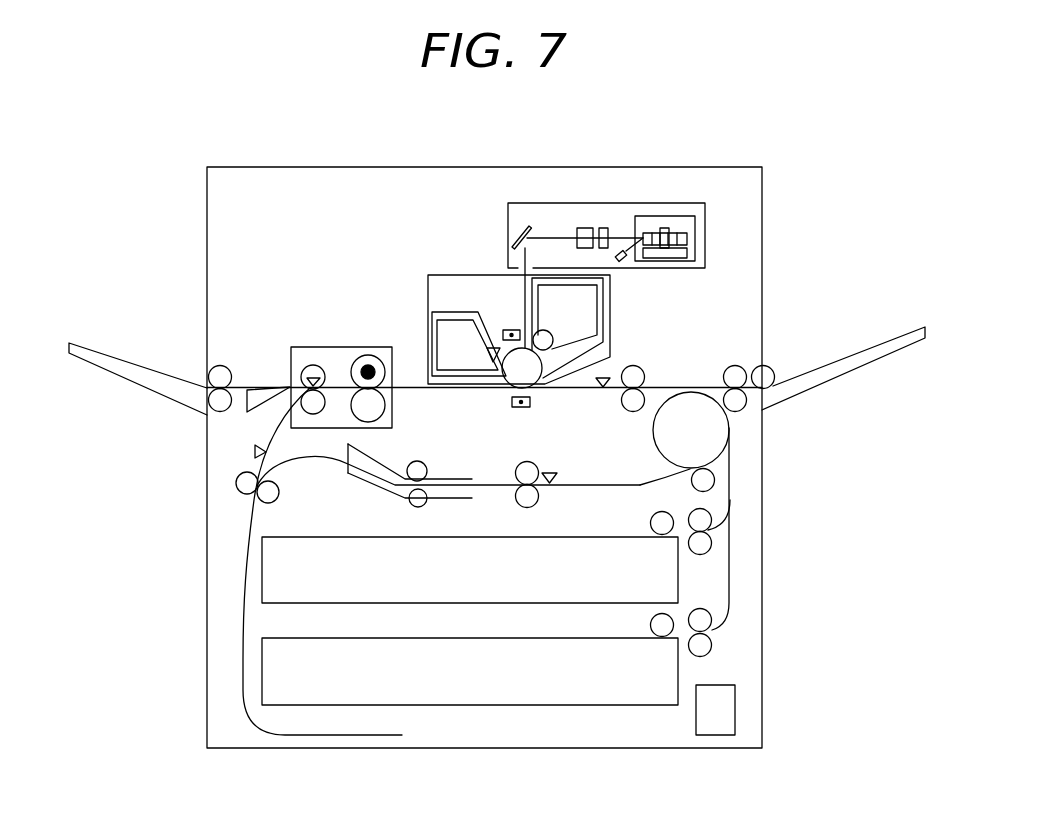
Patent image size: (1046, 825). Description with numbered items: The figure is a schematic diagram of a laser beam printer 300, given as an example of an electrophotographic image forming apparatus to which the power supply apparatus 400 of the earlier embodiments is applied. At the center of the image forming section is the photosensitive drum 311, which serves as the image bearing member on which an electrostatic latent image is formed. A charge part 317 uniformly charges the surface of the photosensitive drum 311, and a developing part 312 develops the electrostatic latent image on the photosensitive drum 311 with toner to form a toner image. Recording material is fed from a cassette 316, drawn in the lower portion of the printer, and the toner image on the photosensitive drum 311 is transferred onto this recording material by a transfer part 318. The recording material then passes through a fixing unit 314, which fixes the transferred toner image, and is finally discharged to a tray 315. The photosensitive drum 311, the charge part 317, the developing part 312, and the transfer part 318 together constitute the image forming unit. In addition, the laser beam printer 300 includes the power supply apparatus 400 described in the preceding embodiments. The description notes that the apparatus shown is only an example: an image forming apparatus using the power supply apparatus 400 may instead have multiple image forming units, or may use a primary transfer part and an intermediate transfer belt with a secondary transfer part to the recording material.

The laser beam printer 300 is at (695, 167).
The photosensitive drum 311 is at (532, 371).
The developing part 312 is at (544, 341).
The fixing unit 314 is at (342, 347).
The tray 315 is at (127, 365).
The cassette 316 is at (660, 688).
The charge part 317 is at (505, 330).
The transfer part 318 is at (531, 402).
The power supply apparatus 400 is at (735, 703).